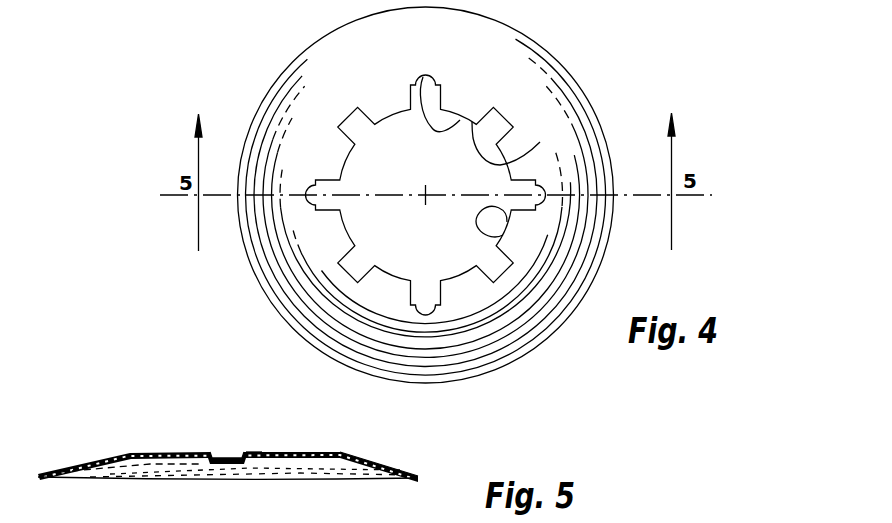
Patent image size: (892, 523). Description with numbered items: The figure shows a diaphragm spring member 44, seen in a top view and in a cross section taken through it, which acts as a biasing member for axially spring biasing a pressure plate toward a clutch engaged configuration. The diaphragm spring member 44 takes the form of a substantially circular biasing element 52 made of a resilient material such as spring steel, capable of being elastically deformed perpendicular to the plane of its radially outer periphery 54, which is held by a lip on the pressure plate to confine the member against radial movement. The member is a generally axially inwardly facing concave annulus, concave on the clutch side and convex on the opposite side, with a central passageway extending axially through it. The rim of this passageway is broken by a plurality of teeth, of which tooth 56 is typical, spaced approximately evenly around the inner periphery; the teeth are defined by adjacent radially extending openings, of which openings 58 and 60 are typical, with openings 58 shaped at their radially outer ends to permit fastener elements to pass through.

In FIG. 4, the diaphragm spring member 44 is at (274, 69).
In FIG. 5, the diaphragm spring member 44 is at (172, 437).
In FIG. 4, the substantially circular biasing element 52 is at (410, 54).
In FIG. 4, the radially outer periphery 54 is at (262, 100).
In FIG. 5, the radially outer periphery 54 is at (418, 476).
In FIG. 4, the tooth 56 is at (503, 235).
In FIG. 5, the tooth 56 is at (253, 453).
In FIG. 4, the radially extending opening 58 is at (460, 120).
In FIG. 5, the radially extending opening 58 is at (221, 452).
In FIG. 4, the radially extending opening 60 is at (540, 142).